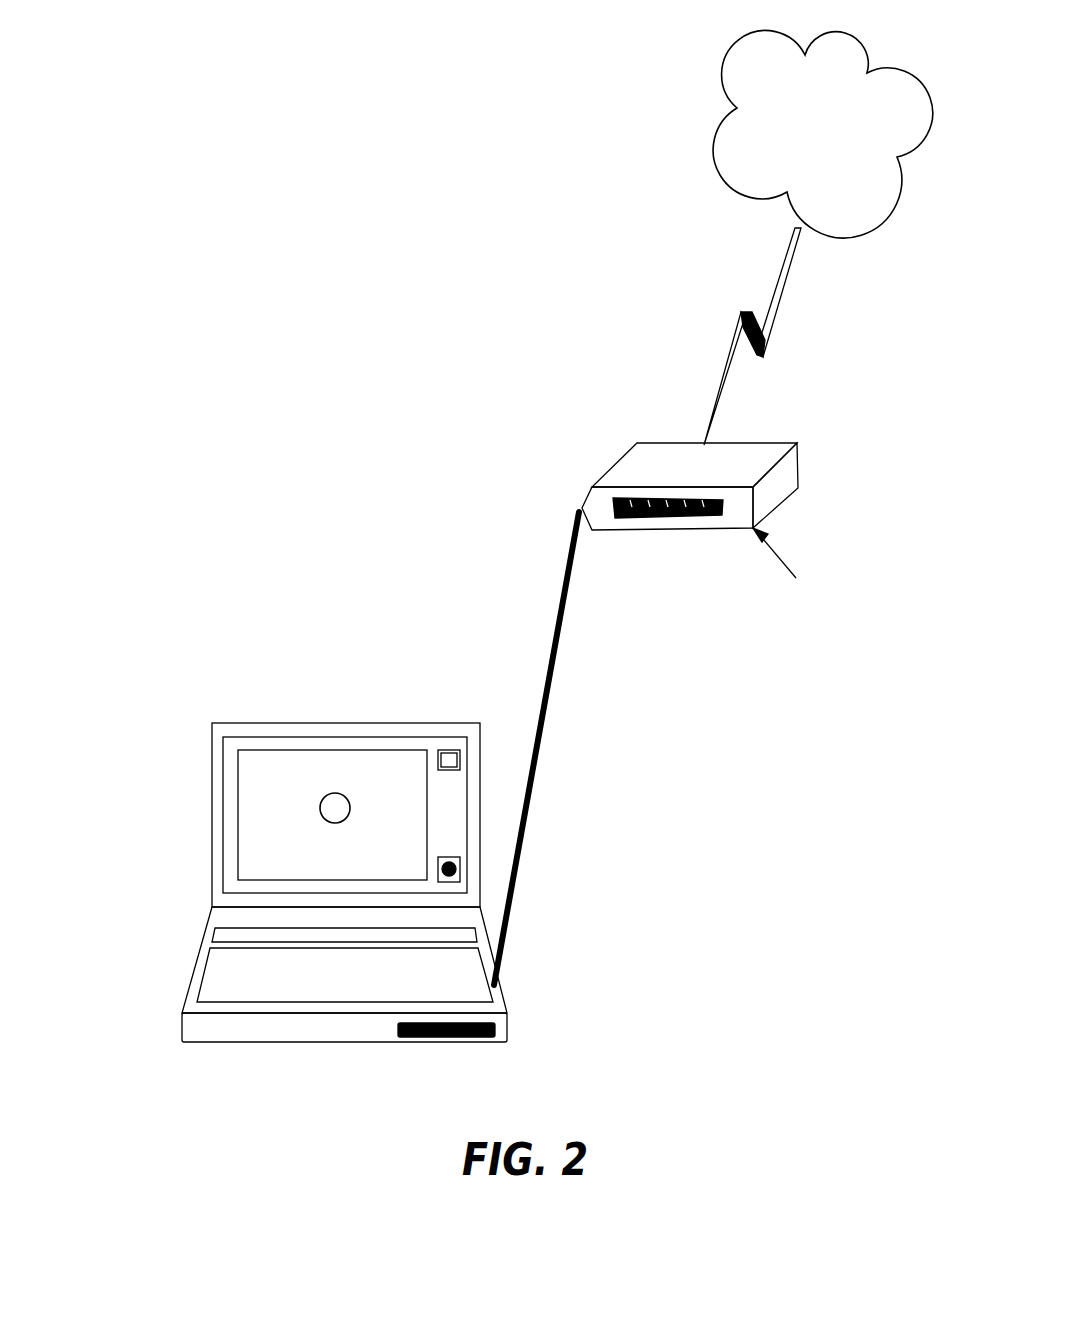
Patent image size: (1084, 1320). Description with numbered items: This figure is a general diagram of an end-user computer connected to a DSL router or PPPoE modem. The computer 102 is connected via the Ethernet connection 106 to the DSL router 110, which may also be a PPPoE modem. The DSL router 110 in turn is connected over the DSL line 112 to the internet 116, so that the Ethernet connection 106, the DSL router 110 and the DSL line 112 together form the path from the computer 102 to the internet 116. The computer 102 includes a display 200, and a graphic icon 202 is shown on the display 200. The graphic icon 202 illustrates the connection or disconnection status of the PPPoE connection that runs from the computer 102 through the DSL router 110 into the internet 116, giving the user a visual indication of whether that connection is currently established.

The internet 116 is at (784, 134).
The DSL line 112 is at (743, 336).
The DSL router 110 is at (740, 507).
The Ethernet connection 106 is at (569, 748).
The display 200 is at (346, 784).
The graphic icon 202 is at (308, 798).
The computer 102 is at (344, 997).